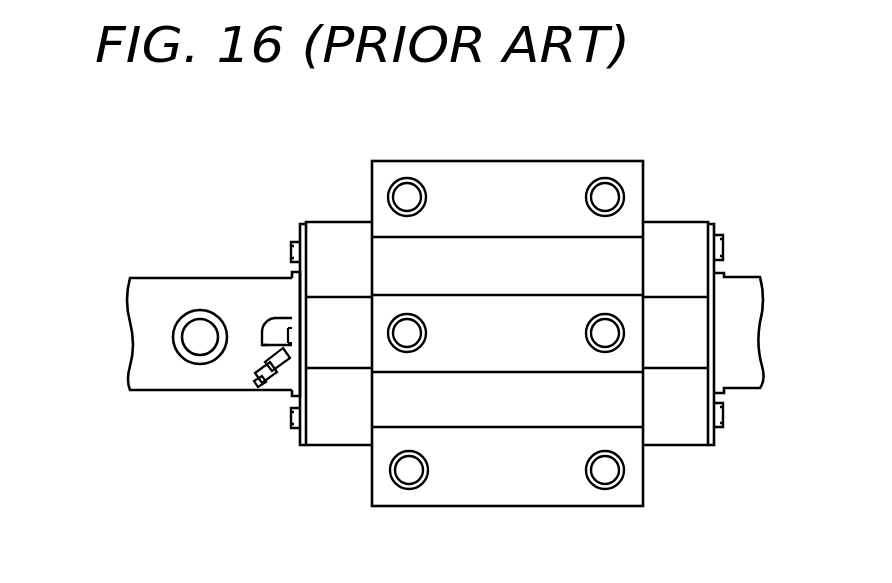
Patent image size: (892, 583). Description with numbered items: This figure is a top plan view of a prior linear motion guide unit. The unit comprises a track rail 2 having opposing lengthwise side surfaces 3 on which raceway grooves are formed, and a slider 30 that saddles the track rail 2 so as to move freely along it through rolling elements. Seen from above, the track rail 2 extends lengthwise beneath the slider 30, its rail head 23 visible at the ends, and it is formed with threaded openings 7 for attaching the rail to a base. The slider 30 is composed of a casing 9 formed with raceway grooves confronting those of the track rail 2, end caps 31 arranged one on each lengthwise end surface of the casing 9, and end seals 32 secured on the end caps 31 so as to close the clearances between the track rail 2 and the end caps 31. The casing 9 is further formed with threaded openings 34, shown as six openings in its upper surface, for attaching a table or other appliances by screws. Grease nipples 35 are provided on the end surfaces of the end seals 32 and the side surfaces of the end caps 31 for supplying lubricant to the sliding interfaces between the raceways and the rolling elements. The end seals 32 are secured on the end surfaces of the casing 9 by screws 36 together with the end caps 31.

The track rail 2 is at (445, 349).
The lengthwise side surfaces 3 is at (445, 332).
The threaded openings 7 is at (190, 341).
The casing 9 is at (496, 486).
The rail head 23 is at (176, 300).
The slider 30 is at (520, 328).
The end caps 31 is at (668, 246).
The end seals 32 is at (714, 228).
The threaded openings 34 is at (406, 196).
The grease nipples 35 is at (258, 372).
The screws 36 is at (291, 246).